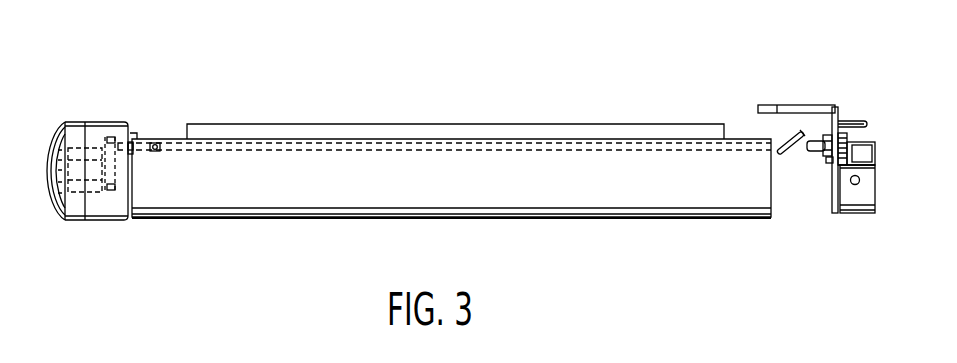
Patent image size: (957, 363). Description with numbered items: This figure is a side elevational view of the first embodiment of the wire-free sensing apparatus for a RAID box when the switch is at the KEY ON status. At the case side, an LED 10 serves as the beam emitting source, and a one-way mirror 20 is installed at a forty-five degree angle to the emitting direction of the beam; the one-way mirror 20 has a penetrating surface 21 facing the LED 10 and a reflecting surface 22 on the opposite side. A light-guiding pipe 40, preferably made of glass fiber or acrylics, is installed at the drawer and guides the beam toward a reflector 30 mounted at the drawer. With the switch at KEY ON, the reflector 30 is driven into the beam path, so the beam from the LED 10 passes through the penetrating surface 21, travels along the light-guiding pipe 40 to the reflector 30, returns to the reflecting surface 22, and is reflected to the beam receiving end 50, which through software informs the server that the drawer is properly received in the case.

The LED 10 is at (815, 136).
The one-way mirror 20 is at (801, 153).
The penetrating surface 21 is at (790, 153).
The reflecting surface 22 is at (783, 132).
The reflector 30 is at (110, 120).
The light-guiding pipe 40 is at (610, 147).
The beam receiving end 50 is at (781, 106).